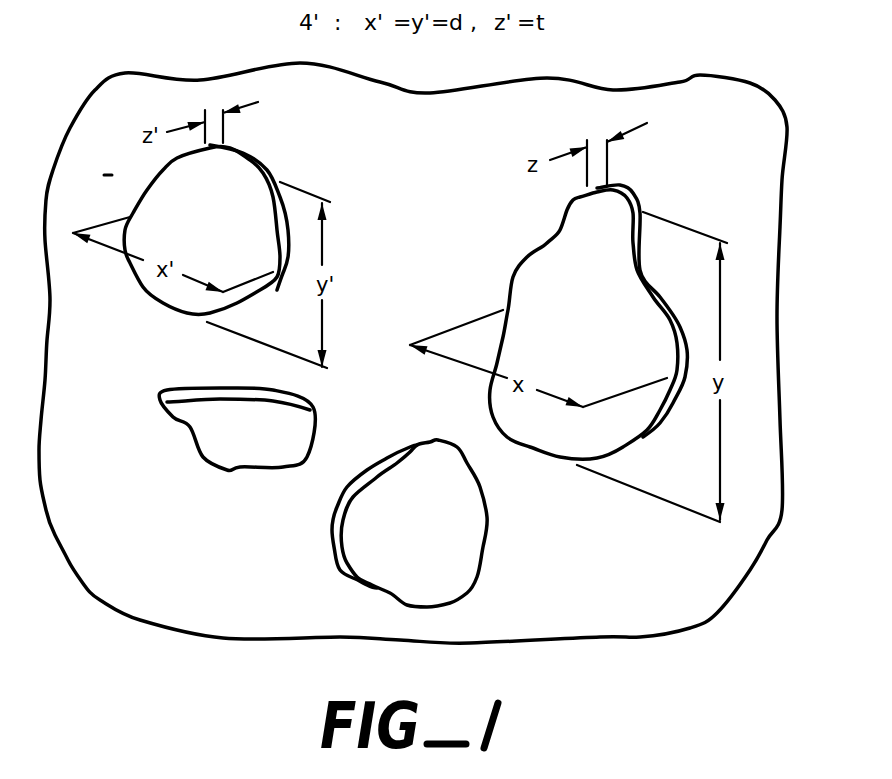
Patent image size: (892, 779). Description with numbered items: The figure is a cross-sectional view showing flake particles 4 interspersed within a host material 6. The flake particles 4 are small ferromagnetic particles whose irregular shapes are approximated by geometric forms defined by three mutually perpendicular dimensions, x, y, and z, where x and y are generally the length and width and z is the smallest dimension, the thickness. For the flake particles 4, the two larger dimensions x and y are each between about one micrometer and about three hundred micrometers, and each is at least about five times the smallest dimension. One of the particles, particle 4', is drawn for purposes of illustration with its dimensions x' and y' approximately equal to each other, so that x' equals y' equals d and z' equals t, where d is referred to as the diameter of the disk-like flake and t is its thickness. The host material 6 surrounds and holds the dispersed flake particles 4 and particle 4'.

The host material 6 is at (427, 176).
The flake particles 4 is at (406, 396).
The particle 4' is at (215, 178).